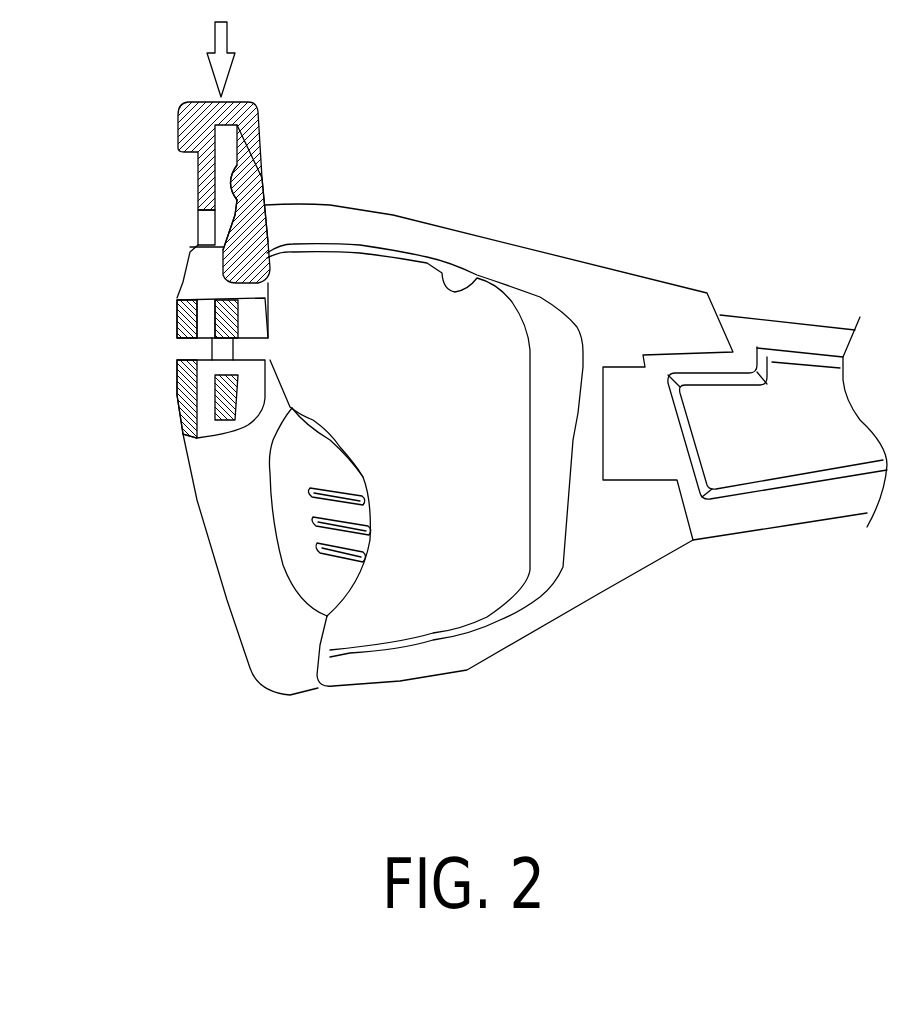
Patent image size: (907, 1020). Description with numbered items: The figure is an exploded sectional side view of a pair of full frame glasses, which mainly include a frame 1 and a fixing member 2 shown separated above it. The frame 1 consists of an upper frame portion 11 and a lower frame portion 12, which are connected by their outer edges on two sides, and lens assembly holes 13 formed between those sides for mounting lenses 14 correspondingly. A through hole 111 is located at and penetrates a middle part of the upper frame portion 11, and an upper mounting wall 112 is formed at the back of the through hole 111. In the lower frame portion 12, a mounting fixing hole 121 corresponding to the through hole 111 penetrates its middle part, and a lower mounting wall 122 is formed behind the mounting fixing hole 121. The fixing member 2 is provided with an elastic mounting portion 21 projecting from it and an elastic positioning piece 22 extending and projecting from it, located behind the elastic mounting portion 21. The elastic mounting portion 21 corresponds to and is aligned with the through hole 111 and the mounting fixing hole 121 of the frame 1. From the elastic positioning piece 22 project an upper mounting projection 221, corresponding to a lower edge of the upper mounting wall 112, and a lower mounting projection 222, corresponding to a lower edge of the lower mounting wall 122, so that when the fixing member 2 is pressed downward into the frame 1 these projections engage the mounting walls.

The frame 1 is at (479, 468).
The upper frame portion 11 is at (402, 222).
The lower frame portion 12 is at (343, 673).
The lens assembly hole 13 is at (463, 290).
The lens 14 is at (483, 547).
The through hole 111 is at (185, 314).
The upper mounting wall 112 is at (230, 296).
The mounting fixing hole 121 is at (206, 372).
The lower mounting wall 122 is at (215, 404).
The fixing member 2 is at (200, 117).
The elastic mounting portion 21 is at (207, 223).
The elastic positioning piece 22 is at (253, 183).
The upper mounting projection 221 is at (240, 167).
The lower mounting projection 222 is at (233, 233).